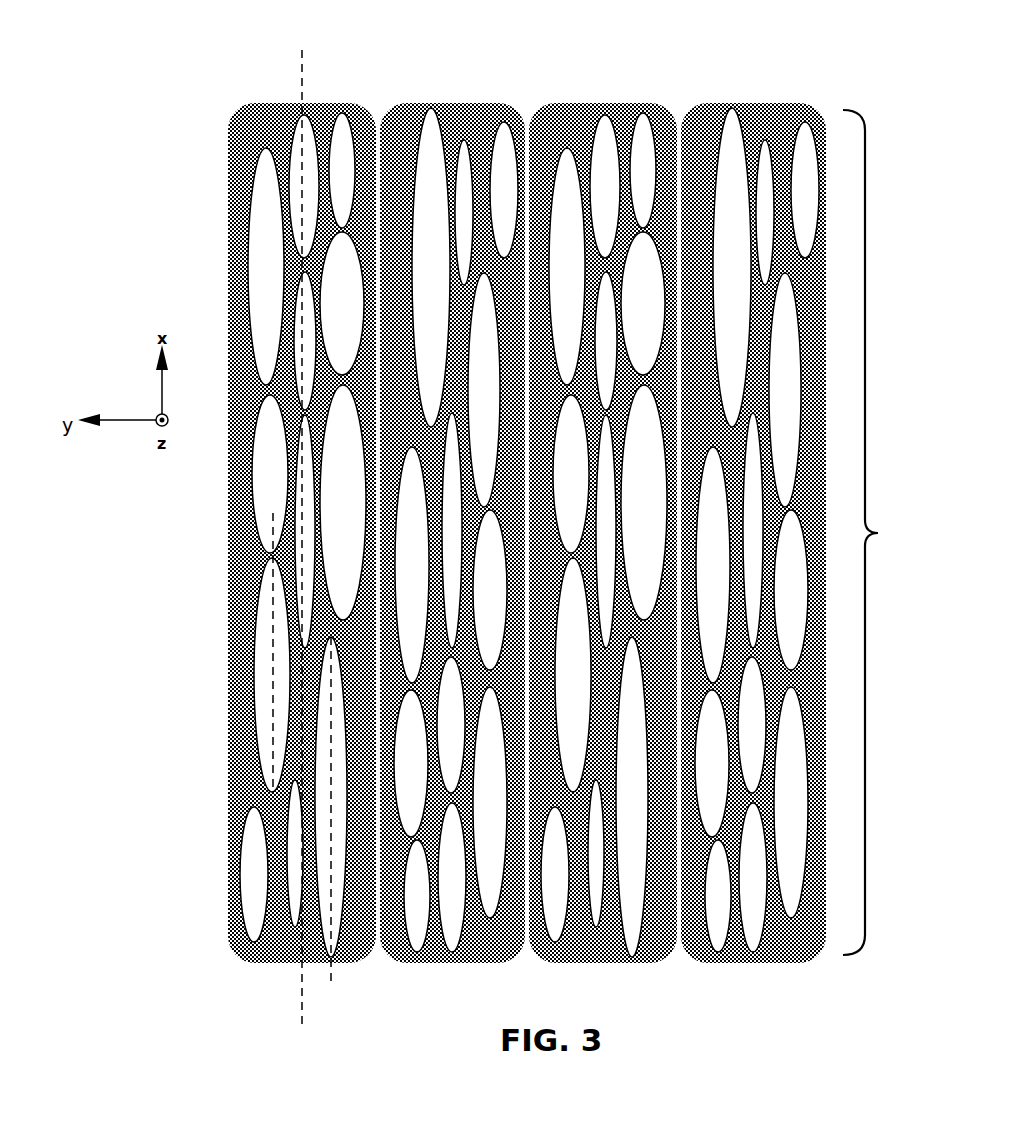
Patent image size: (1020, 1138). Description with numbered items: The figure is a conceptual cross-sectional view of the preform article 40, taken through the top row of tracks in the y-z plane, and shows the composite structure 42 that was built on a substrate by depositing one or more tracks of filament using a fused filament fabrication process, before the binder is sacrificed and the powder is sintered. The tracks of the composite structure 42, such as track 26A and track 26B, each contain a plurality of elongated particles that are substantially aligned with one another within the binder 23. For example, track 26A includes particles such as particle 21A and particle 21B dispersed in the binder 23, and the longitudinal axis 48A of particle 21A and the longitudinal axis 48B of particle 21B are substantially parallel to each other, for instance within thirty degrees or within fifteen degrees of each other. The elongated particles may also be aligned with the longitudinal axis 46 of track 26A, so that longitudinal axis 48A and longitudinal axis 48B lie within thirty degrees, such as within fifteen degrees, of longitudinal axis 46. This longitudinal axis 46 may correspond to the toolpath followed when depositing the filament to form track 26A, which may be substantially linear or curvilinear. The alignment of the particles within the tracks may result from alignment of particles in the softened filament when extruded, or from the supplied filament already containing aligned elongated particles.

The preform article 40 is at (90, 72).
The track 26A is at (294, 552).
The track 26B is at (433, 502).
The binder 23 is at (453, 110).
The particle 21A is at (268, 695).
The particle 21B is at (340, 888).
The longitudinal axis 48A is at (273, 748).
The longitudinal axis 48B is at (332, 975).
The longitudinal axis 46 is at (302, 990).
The composite structure 42 is at (880, 532).